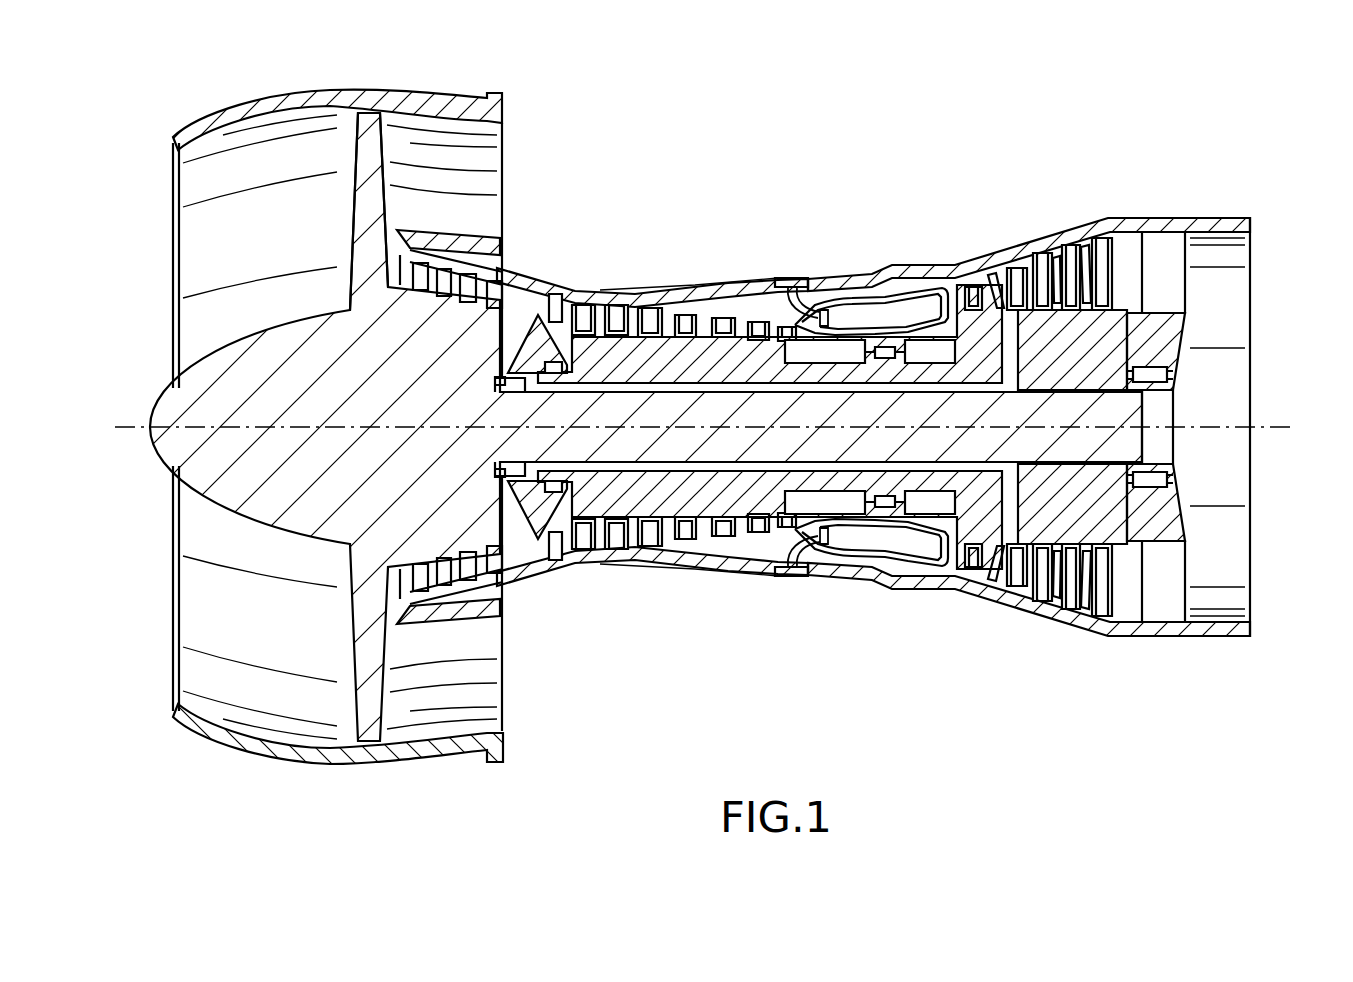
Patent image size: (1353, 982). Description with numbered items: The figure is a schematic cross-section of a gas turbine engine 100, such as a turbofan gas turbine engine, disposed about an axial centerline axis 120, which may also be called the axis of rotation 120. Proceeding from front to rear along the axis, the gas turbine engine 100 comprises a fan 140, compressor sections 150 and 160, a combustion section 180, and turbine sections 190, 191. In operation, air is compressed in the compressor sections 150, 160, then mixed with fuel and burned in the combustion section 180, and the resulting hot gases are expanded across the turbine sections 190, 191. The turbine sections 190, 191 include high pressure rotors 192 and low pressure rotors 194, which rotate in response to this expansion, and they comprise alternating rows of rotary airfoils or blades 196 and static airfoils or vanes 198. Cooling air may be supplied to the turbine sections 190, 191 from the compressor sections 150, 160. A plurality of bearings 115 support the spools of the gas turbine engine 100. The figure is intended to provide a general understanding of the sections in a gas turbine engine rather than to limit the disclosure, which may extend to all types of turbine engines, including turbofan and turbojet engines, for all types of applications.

The gas turbine engine 100 is at (966, 146).
The bearings 115 is at (1167, 373).
The axial centerline axis 120 is at (132, 427).
The fan 140 is at (386, 225).
The compressor section 150 is at (404, 769).
The compressor section 160 is at (583, 579).
The combustion section 180 is at (808, 599).
The turbine section 190 is at (943, 651).
The turbine section 191 is at (1017, 651).
The high pressure rotors 192 is at (990, 305).
The low pressure rotors 194 is at (1113, 333).
The rotary airfoils or blades 196 is at (1057, 268).
The static airfoils or vanes 198 is at (1068, 250).